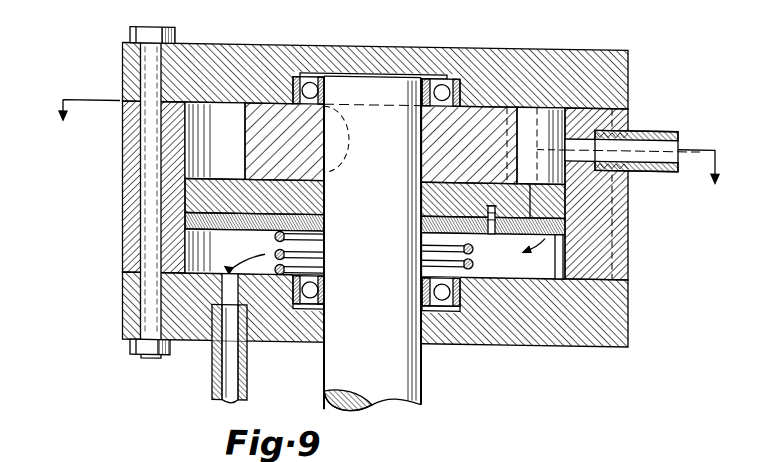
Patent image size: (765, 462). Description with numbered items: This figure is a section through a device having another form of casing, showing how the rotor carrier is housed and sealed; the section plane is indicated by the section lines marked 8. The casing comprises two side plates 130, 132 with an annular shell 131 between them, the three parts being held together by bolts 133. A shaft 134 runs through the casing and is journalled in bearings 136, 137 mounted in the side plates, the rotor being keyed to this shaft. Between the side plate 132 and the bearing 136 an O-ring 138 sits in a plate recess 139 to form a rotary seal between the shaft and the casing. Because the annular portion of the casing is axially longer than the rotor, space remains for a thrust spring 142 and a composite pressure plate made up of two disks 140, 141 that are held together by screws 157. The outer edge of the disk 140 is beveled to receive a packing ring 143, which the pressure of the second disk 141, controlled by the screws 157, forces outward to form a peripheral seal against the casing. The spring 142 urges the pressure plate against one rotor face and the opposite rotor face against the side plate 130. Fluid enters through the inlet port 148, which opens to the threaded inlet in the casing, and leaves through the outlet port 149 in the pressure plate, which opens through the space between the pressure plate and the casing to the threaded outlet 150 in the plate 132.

The section line 8- 8 is at (387, 157).
The side plate 130 is at (122, 80).
The annular shell 131 is at (122, 256).
The side plate 132 is at (122, 320).
The bolts 133 is at (141, 358).
The shaft 134 is at (408, 86).
The bearing 136 is at (300, 311).
The bearing 137 is at (293, 79).
The O-ring 138 is at (436, 311).
The plate recess 139 is at (431, 316).
The disk 140 is at (426, 194).
The disk 141 is at (422, 227).
The thrust spring 142 is at (506, 324).
The packing ring 143 is at (628, 221).
The inlet port 148 is at (651, 166).
The outlet port 149 is at (547, 236).
The threaded outlet 150 is at (212, 358).
The screws 157 is at (491, 234).